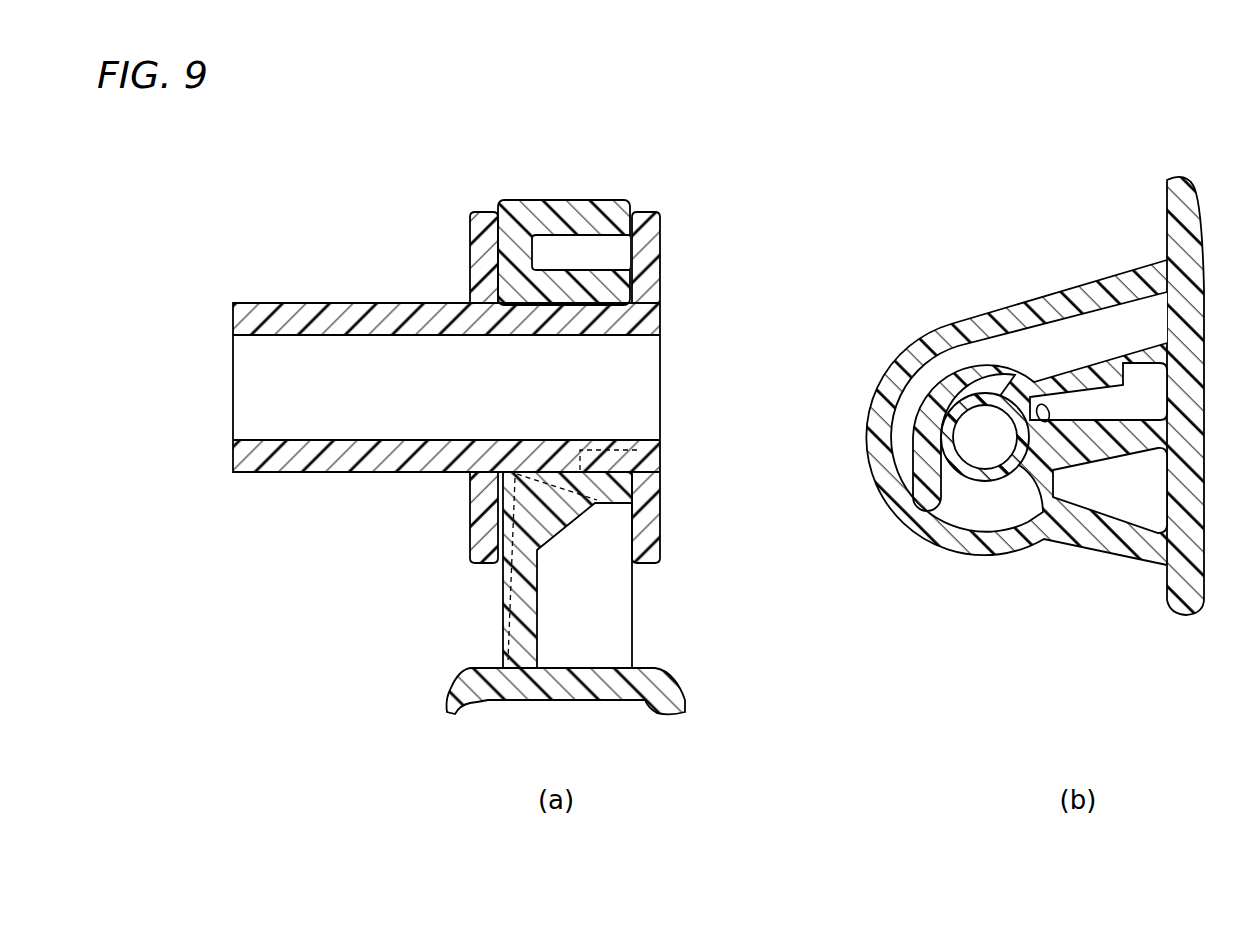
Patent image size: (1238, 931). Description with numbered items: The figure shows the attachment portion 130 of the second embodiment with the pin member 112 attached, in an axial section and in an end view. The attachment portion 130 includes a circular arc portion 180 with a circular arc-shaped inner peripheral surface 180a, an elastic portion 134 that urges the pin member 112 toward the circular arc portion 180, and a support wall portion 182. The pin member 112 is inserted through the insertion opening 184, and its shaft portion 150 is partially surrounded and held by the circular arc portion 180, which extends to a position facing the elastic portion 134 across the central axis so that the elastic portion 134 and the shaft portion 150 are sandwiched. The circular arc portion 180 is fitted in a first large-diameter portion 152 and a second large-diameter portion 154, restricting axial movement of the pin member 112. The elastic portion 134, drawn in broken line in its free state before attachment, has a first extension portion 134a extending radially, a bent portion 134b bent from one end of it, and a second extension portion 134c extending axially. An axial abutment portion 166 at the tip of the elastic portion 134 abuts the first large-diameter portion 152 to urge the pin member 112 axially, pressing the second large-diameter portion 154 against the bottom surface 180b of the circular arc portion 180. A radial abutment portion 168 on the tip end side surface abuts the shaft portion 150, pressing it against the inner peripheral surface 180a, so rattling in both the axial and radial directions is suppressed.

The pin member 112 is at (291, 302).
The attachment portion 130 is at (502, 617).
The elastic portion 134 is at (597, 504).
The first extension portion 134a is at (527, 600).
The bent portion 134b is at (557, 525).
The second extension portion 134c is at (636, 517).
The shaft portion 150 is at (577, 308).
The first large-diameter portion 152 is at (665, 250).
The second large-diameter portion 154 is at (470, 238).
The axial abutment portion 166 is at (648, 497).
The radial abutment portion 168 is at (583, 455).
The circular arc portion 180 is at (576, 200).
The inner peripheral surface 180a is at (553, 300).
The bottom surface 180b is at (510, 238).
The support wall portion 182 is at (1045, 500).
The insertion opening 184 is at (959, 504).